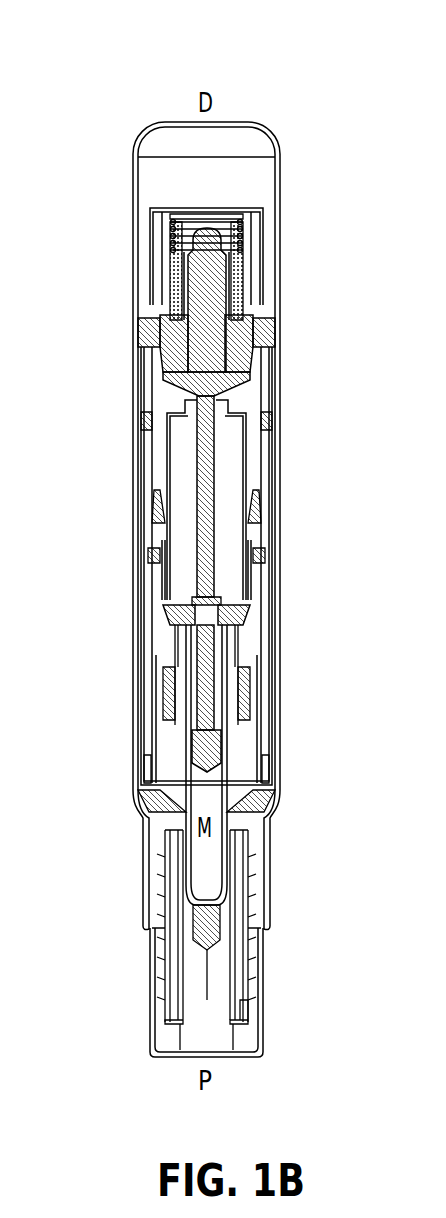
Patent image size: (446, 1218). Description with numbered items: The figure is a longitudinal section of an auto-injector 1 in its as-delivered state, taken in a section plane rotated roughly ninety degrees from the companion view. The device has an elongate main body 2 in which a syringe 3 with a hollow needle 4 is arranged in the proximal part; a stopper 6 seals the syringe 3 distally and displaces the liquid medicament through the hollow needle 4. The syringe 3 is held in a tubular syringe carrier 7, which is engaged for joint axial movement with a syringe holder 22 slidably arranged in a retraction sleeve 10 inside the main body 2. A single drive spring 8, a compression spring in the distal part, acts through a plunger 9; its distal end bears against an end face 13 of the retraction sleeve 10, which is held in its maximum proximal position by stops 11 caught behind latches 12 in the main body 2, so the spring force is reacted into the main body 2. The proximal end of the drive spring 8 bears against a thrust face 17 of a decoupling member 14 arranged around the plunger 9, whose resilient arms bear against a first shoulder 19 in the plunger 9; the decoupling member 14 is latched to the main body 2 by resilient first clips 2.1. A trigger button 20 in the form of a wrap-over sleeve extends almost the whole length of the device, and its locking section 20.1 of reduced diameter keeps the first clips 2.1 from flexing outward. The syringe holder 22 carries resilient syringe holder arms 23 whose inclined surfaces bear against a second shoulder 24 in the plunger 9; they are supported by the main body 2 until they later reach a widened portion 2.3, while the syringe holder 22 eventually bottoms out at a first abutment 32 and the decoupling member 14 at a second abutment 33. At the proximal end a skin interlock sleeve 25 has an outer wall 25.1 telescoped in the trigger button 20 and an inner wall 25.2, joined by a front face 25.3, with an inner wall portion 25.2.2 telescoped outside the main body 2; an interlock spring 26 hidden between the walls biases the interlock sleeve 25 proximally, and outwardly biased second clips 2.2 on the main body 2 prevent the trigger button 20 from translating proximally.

The auto-injector 1 is at (307, 80).
The main body 2 is at (272, 680).
The first clips 2.1 is at (263, 350).
The second clips 2.2 is at (145, 800).
The widened portion 2.3 is at (262, 705).
The syringe 3 is at (186, 748).
The hollow needle 4 is at (213, 968).
The stopper 6 is at (217, 747).
The syringe carrier 7 is at (155, 775).
The drive spring 8 is at (237, 217).
The plunger 9 is at (207, 473).
The retraction sleeve 10 is at (158, 483).
The stops 11 is at (150, 537).
The latches 12 is at (148, 520).
The end face 13 is at (163, 208).
The decoupling member 14 is at (140, 388).
The thrust face 17 is at (237, 318).
The first shoulder 19 is at (141, 427).
The trigger button 20 is at (152, 126).
The locking section 20.1 is at (140, 340).
The syringe holder 22 is at (150, 677).
The syringe holder arms 23 is at (233, 607).
The second shoulder 24 is at (222, 598).
The skin interlock sleeve 25 is at (148, 1047).
The outer wall 25.1 is at (158, 952).
The inner wall 25.2 is at (181, 1047).
The inner wall portion 25.2.2 is at (243, 1010).
The front face 25.3 is at (258, 1057).
The interlock spring 26 is at (253, 885).
The first abutment 32 is at (266, 765).
The second abutment 33 is at (262, 537).